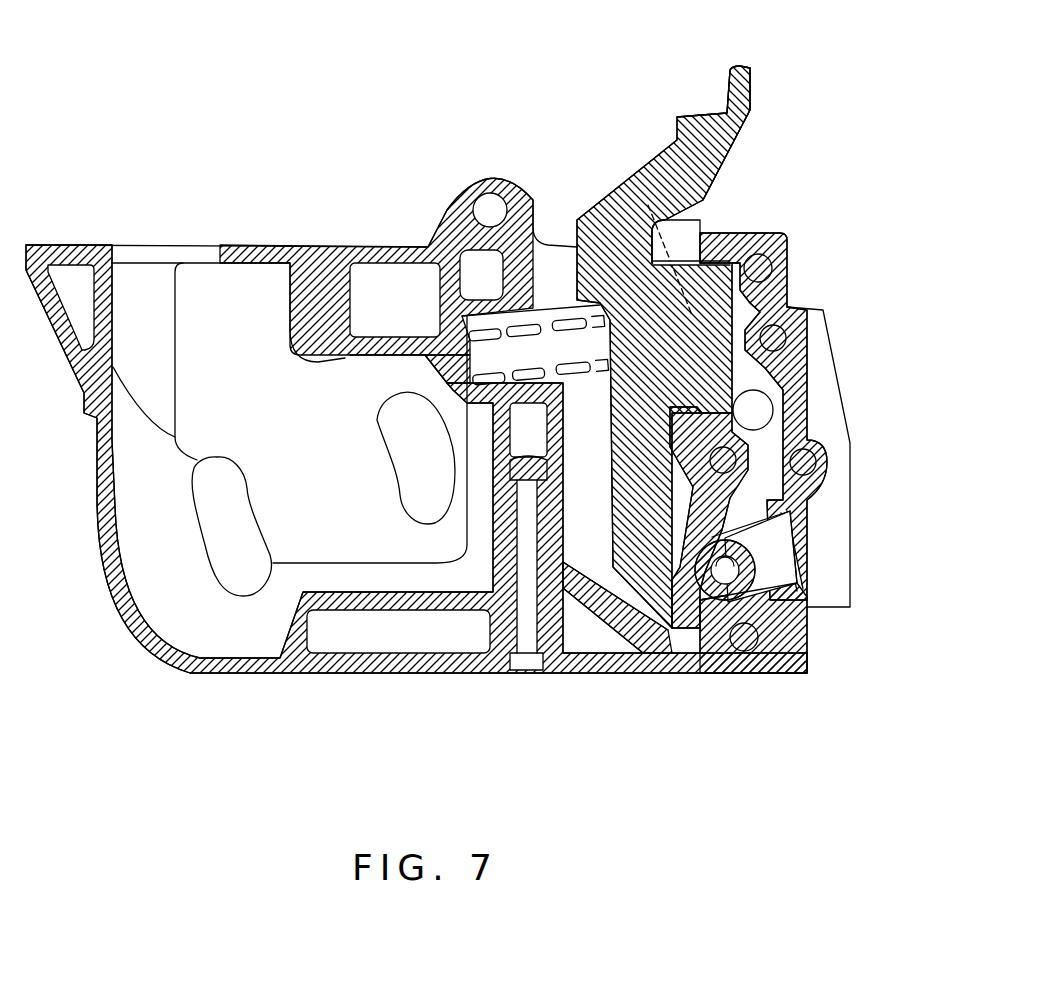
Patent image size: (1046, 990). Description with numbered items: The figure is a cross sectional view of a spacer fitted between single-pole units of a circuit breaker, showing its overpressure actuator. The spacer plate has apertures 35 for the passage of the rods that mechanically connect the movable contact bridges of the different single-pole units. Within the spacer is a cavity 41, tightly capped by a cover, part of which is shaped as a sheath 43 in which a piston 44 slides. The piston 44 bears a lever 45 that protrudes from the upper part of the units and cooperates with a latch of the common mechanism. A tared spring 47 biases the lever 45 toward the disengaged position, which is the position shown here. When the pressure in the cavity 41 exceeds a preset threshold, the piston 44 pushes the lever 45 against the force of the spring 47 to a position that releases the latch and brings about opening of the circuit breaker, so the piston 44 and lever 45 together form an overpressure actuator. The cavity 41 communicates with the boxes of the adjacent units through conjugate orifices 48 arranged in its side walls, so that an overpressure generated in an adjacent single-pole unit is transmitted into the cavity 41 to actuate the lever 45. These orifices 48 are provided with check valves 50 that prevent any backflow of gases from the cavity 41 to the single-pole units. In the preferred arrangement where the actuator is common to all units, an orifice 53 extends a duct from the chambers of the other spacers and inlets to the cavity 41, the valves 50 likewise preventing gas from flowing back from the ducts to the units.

The apertures 35 is at (233, 550).
The cavity 41 is at (758, 467).
The sheath 43 is at (703, 227).
The piston 44 is at (640, 180).
The lever 45 is at (703, 137).
The tared spring 47 is at (552, 310).
The orifices 48 is at (720, 577).
The check valves 50 is at (797, 673).
The orifice 53 is at (790, 307).